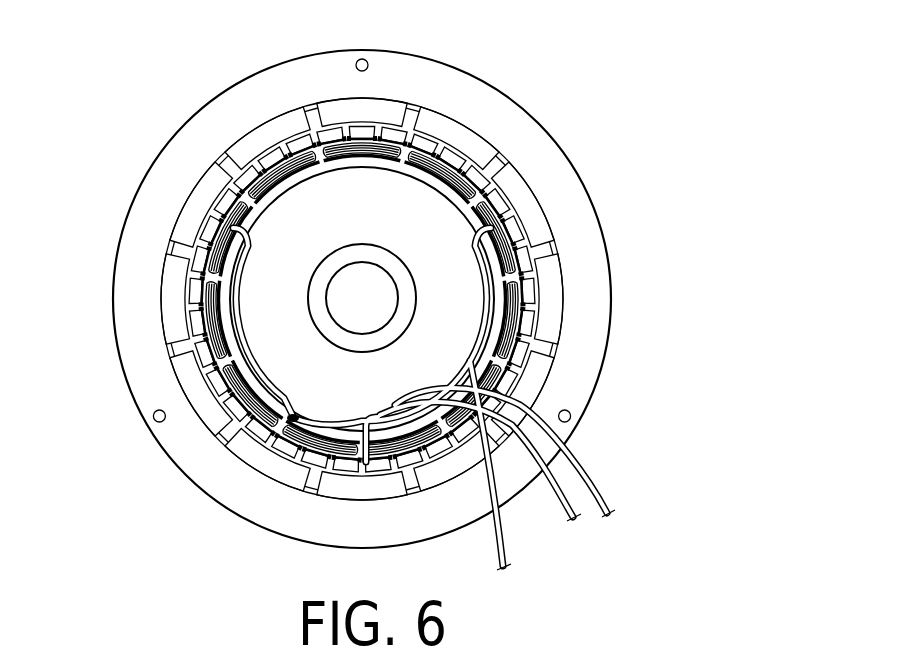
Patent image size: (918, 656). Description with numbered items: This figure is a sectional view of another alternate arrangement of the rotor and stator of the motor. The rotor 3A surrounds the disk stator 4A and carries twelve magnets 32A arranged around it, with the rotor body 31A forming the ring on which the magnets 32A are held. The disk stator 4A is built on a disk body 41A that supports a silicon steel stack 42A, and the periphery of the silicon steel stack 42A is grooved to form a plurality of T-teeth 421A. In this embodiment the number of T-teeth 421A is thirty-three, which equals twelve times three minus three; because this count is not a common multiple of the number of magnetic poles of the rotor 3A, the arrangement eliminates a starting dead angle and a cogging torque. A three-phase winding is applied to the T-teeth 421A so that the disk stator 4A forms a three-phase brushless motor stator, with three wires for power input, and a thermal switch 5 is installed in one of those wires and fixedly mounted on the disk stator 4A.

The rotor 3A is at (593, 207).
The frame ring portion 31A is at (588, 263).
The magnets 32A is at (557, 302).
The disk stator 4A is at (322, 289).
The stator core 41A is at (300, 196).
The coil winding 42A is at (343, 153).
The T-teeth 421A is at (390, 128).
The thermal switch 5 is at (267, 443).